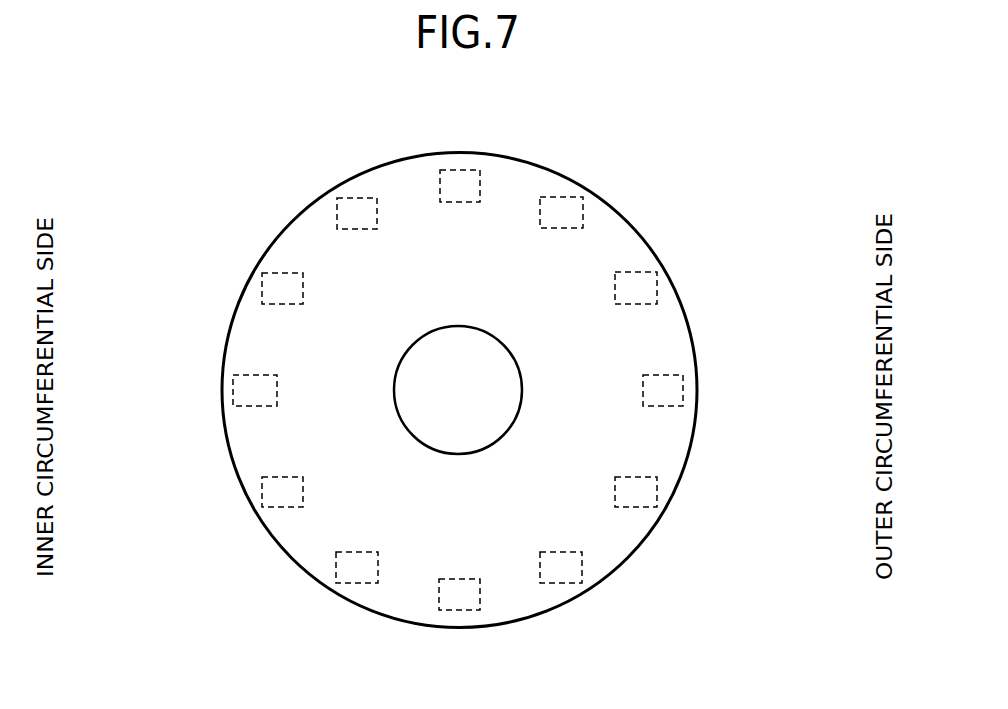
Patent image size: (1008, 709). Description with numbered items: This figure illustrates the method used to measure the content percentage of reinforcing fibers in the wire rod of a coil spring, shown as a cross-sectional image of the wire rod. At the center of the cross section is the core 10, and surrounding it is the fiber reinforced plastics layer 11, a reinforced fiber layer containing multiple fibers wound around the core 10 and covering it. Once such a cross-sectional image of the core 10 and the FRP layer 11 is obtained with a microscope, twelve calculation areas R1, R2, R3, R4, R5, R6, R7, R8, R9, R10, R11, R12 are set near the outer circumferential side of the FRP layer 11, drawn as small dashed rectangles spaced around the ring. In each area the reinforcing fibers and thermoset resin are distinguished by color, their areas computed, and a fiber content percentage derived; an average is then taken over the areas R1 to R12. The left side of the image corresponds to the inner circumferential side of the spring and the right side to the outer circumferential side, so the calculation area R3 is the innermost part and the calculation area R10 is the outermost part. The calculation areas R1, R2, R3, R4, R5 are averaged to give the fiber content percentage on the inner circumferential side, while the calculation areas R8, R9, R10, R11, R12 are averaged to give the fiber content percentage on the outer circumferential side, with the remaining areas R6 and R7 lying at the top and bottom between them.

The core 10 is at (441, 422).
The fiber reinforced plastics (FRP) layer 11 is at (638, 547).
The calculation area R1 is at (347, 583).
The calculation area R2 is at (262, 492).
The calculation area R3 is at (233, 392).
The calculation area R4 is at (262, 292).
The calculation area R5 is at (345, 198).
The calculation area R6 is at (458, 170).
The calculation area R7 is at (457, 610).
The calculation area R8 is at (560, 197).
The calculation area R9 is at (657, 290).
The calculation area R10 is at (683, 392).
The calculation area R11 is at (657, 494).
The calculation area R12 is at (560, 583).